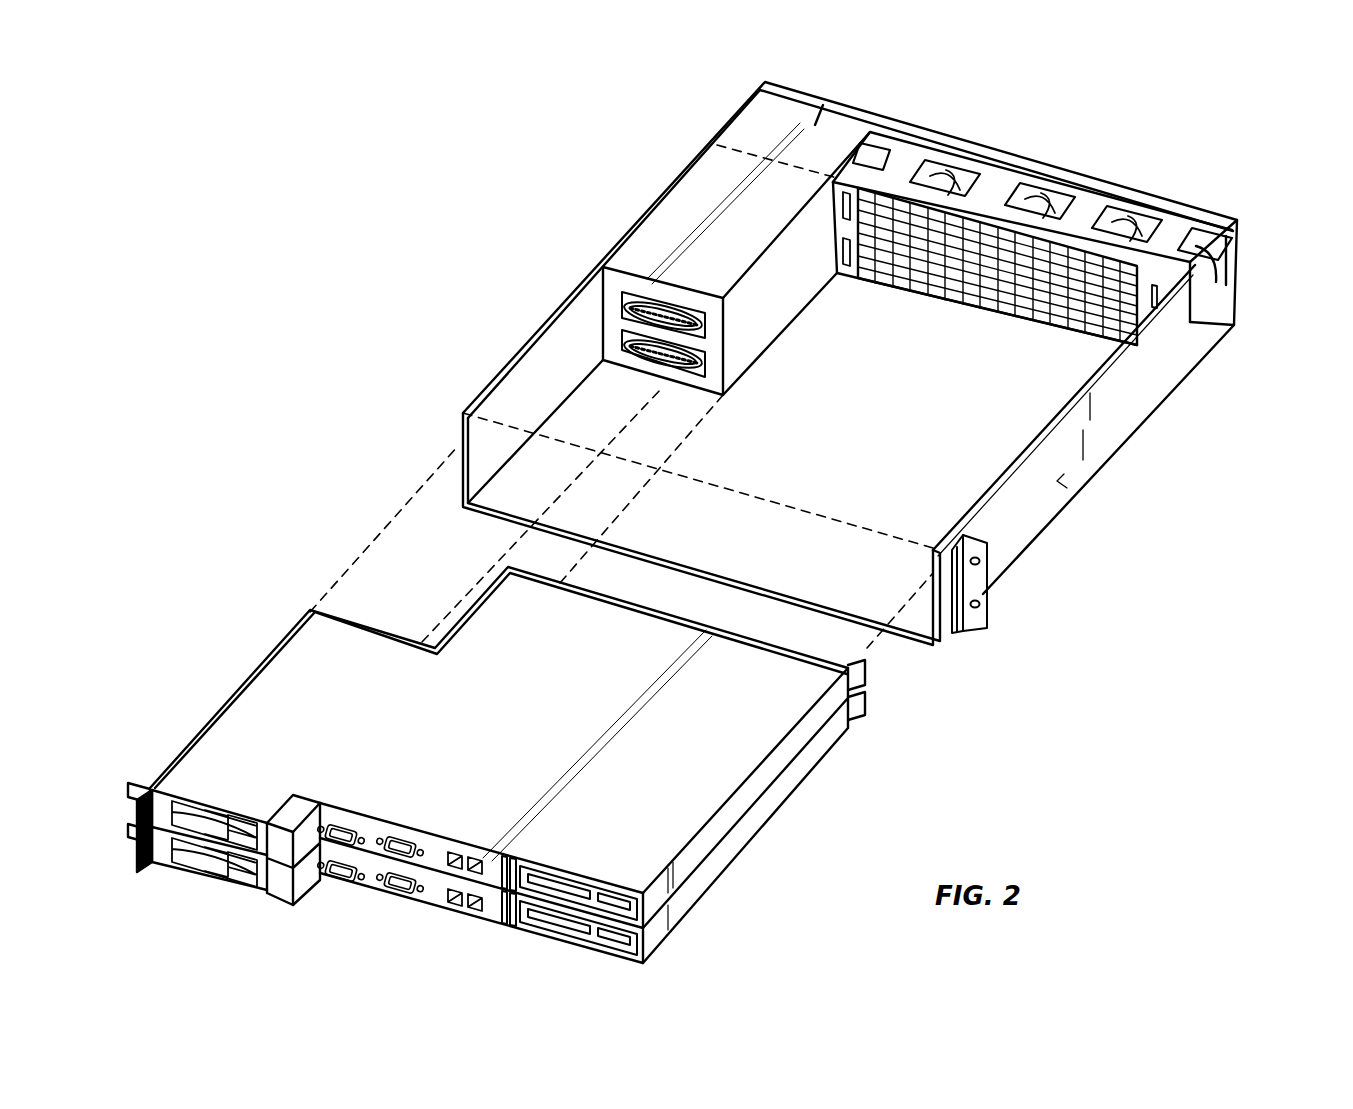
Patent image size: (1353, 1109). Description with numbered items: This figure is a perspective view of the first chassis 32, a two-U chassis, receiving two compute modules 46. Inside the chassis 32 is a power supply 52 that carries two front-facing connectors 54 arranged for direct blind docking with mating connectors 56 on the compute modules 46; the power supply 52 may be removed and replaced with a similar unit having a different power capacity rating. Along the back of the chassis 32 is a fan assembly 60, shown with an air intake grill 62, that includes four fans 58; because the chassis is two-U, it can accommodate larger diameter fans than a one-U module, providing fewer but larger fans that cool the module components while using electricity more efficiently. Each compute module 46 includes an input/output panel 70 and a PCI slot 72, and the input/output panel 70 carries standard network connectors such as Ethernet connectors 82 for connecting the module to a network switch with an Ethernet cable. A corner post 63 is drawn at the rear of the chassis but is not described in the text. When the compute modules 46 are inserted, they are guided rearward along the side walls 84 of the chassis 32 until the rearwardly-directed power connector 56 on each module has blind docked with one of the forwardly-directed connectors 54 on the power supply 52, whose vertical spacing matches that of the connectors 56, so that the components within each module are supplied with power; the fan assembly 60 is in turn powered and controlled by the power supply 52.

The first chassis 32 is at (503, 286).
The compute module 46 is at (760, 782).
The power supply 52 is at (687, 203).
The front-facing connector 54 is at (690, 335).
The mating connector 56 is at (378, 612).
The fan 58 is at (905, 145).
The fan assembly 60 is at (958, 162).
The air intake grill 62 is at (915, 292).
The corner post 63 is at (1193, 286).
The input/output panel 70 is at (362, 850).
The PCI slot 72 is at (600, 900).
The Ethernet connector 82 is at (470, 860).
The side wall 84 is at (494, 413).